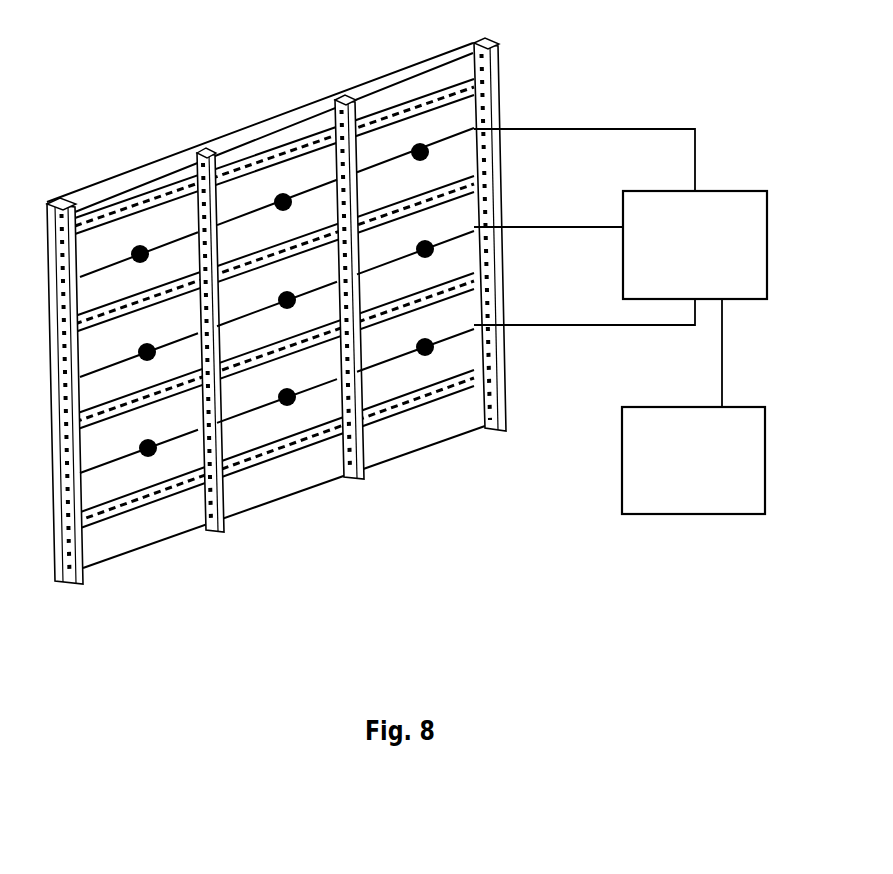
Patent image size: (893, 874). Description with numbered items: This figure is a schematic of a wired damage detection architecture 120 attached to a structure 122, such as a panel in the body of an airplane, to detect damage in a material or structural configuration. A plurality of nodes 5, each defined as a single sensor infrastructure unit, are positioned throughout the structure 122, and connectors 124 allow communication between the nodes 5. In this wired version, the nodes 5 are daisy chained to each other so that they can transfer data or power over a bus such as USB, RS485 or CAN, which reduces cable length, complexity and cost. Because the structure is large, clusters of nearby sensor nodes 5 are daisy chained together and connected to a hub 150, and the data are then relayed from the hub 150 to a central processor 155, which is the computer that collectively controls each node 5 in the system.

The wired damage detection architecture 120 is at (348, 296).
The structure 122 is at (63, 200).
The connectors 124 is at (80, 278).
The node 5 is at (123, 55).
The hub 150 is at (767, 245).
The central processor 155 is at (765, 460).